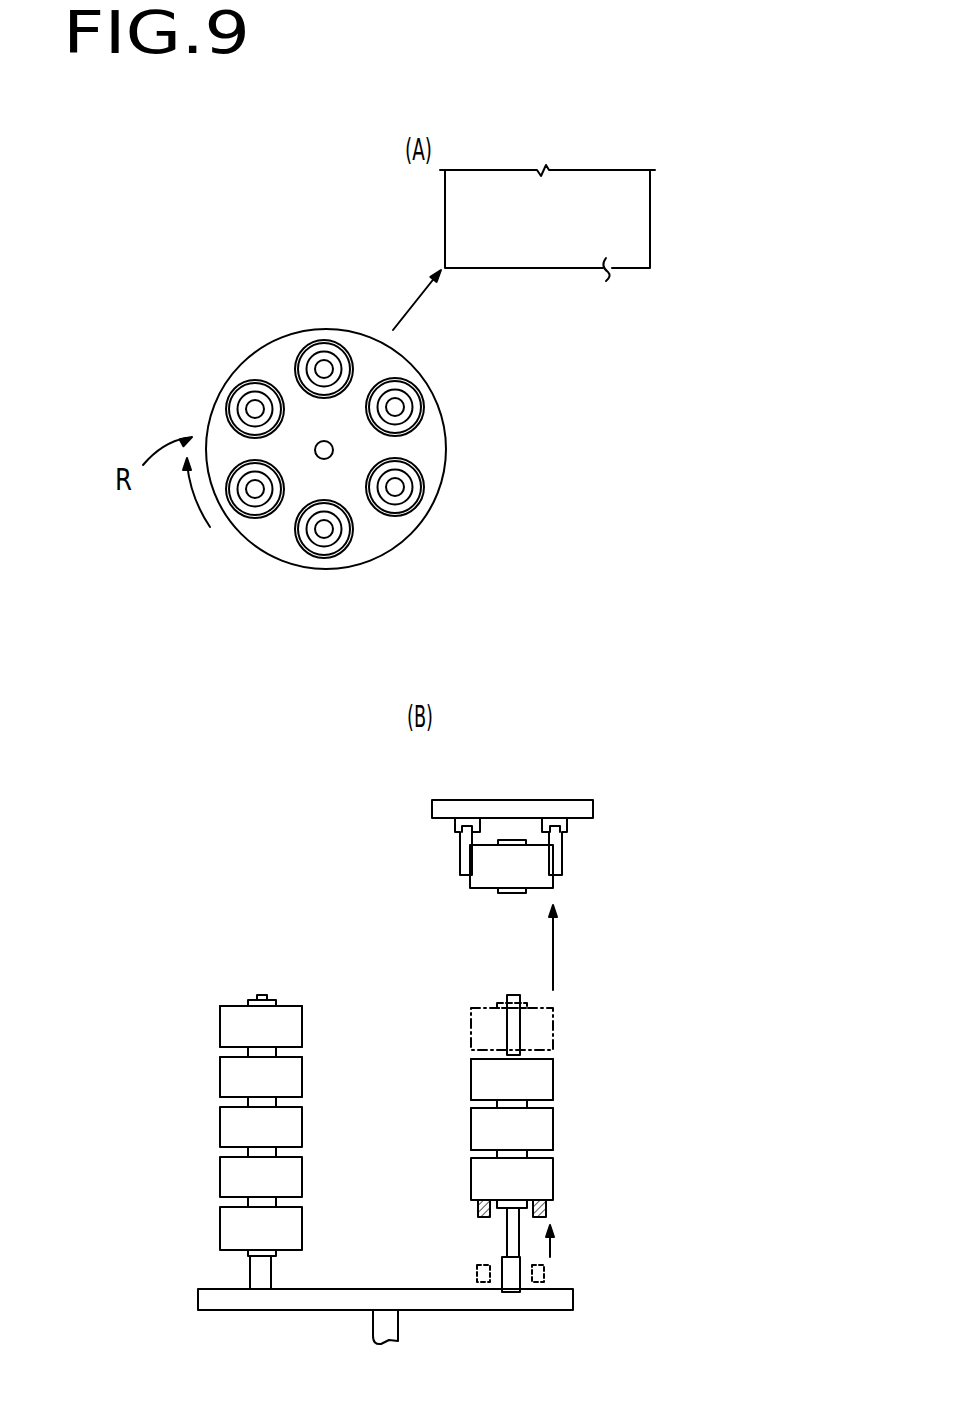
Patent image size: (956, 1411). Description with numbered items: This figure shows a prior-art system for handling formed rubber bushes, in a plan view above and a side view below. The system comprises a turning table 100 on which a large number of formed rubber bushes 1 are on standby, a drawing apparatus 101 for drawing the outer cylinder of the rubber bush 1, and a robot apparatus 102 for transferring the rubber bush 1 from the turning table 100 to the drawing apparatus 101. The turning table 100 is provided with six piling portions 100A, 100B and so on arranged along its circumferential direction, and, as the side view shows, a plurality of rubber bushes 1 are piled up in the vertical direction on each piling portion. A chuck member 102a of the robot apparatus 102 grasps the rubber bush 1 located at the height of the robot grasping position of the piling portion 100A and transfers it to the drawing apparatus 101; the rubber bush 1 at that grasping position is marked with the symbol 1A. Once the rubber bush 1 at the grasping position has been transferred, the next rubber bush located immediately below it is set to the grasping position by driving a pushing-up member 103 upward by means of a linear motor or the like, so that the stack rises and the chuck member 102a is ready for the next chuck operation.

The rubber bush 1 is at (222, 1075).
The rubber bush at grasping position 1A is at (548, 880).
The turning table 100 is at (447, 422).
The piling portion 100A is at (306, 343).
The piling portion 100B is at (231, 394).
The drawing apparatus 101 is at (547, 243).
The robot apparatus 102 is at (615, 816).
The chuck member 102a is at (567, 862).
The pushing-up member 103 is at (547, 1213).